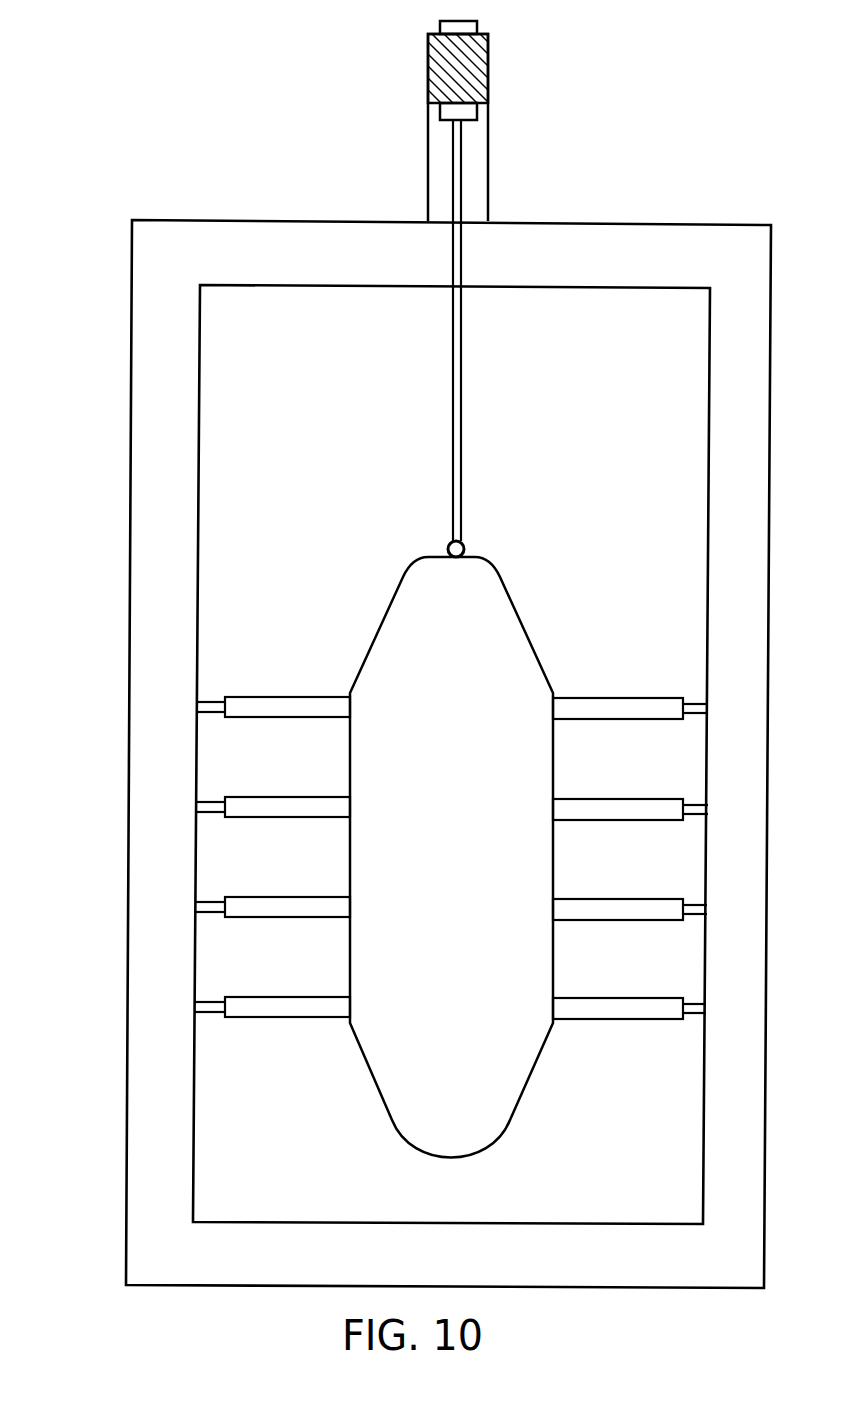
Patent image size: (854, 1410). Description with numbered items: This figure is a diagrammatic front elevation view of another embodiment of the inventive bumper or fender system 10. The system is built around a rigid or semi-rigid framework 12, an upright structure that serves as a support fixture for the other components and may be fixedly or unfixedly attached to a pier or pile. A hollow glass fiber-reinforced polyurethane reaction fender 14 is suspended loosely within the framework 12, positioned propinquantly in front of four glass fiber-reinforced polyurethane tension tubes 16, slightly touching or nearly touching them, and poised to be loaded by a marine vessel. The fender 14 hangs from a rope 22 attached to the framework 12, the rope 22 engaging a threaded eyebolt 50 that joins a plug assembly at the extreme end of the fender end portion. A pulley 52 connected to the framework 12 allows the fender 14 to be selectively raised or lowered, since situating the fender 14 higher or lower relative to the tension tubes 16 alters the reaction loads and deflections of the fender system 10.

The fender system 10 is at (248, 163).
The framework 12 is at (128, 453).
The reaction fender 14 is at (537, 650).
The tension tubes 16 is at (311, 697).
The ropes 22 is at (450, 386).
The threaded eyebolts 50 is at (445, 548).
The pulleys 52 is at (493, 67).